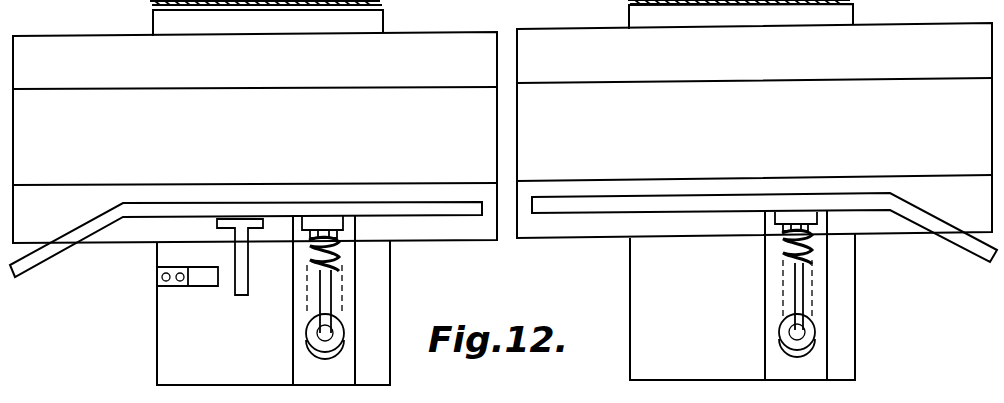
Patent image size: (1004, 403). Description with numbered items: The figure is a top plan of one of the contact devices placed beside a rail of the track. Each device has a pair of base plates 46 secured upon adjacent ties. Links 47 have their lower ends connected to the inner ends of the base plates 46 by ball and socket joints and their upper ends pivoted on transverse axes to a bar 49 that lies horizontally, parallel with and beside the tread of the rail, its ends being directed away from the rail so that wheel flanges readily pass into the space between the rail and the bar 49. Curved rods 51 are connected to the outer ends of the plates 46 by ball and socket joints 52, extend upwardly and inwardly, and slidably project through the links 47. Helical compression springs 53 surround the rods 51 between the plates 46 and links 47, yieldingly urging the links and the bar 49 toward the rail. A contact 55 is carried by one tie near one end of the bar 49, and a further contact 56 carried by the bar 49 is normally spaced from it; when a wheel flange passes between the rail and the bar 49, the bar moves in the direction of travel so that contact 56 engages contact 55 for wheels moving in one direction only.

The base plate 46 is at (820, 358).
The link 47 is at (332, 218).
The bar 49 is at (585, 209).
The curved rod 51 is at (327, 288).
The ball and socket joint 52 is at (343, 332).
The helical compression spring 53 is at (343, 262).
The contact 55 is at (197, 286).
The contact 56 is at (241, 296).